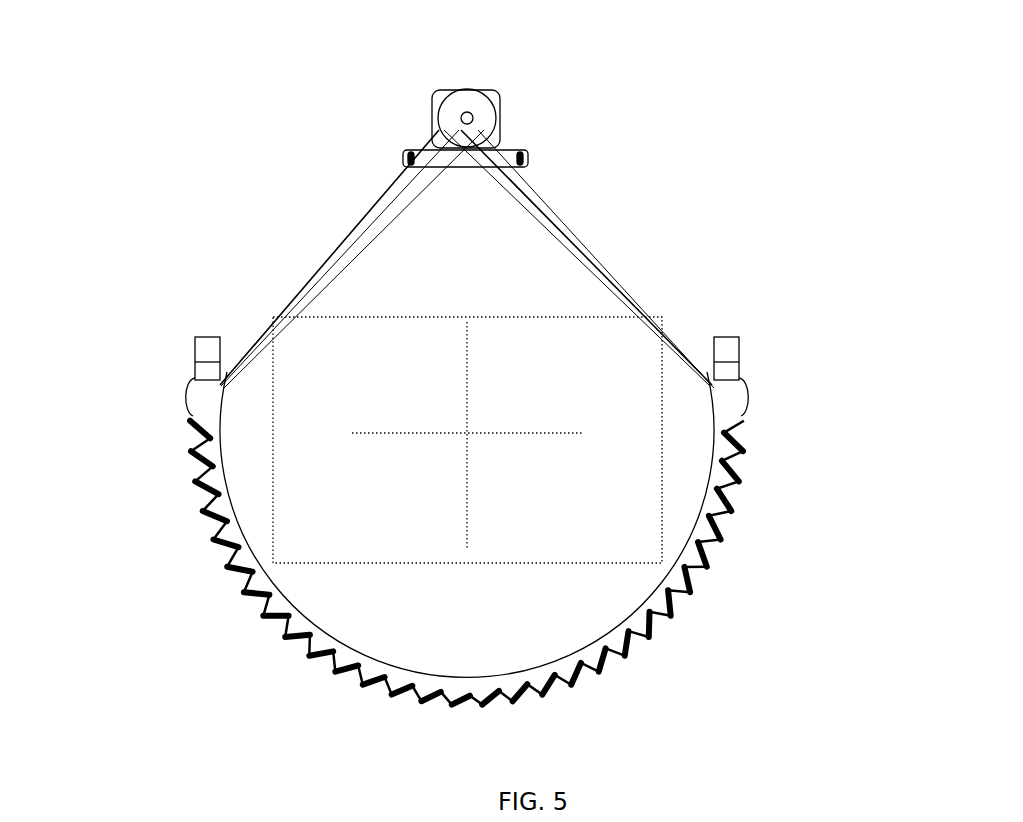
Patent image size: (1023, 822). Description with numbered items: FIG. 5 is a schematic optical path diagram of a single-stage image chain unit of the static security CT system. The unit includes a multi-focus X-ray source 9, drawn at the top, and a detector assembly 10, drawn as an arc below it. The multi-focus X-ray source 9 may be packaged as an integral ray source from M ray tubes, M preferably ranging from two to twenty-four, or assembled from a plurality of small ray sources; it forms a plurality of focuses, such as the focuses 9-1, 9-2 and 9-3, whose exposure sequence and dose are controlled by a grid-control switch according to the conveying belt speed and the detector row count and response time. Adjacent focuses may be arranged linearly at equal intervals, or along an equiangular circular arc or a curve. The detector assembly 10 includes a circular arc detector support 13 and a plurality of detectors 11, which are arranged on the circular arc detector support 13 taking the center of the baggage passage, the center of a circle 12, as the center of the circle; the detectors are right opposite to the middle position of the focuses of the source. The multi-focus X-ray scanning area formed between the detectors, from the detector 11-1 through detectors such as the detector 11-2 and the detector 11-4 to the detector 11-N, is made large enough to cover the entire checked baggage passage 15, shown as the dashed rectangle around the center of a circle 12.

The multi-focus X-ray source 9 is at (527, 72).
The focus 9-1 is at (497, 117).
The focus 9-2 is at (499, 128).
The focus 9-3 is at (440, 114).
The detector assembly 10 is at (970, 442).
The detectors 11 is at (867, 457).
The detector 11-1 is at (745, 430).
The detector 11-2 is at (742, 462).
The detector 11-4 is at (733, 514).
The detector 11-N is at (197, 455).
The center of a circle 12 is at (472, 430).
The circular arc detector support 13 is at (626, 633).
The checked baggage passage 15 is at (497, 318).